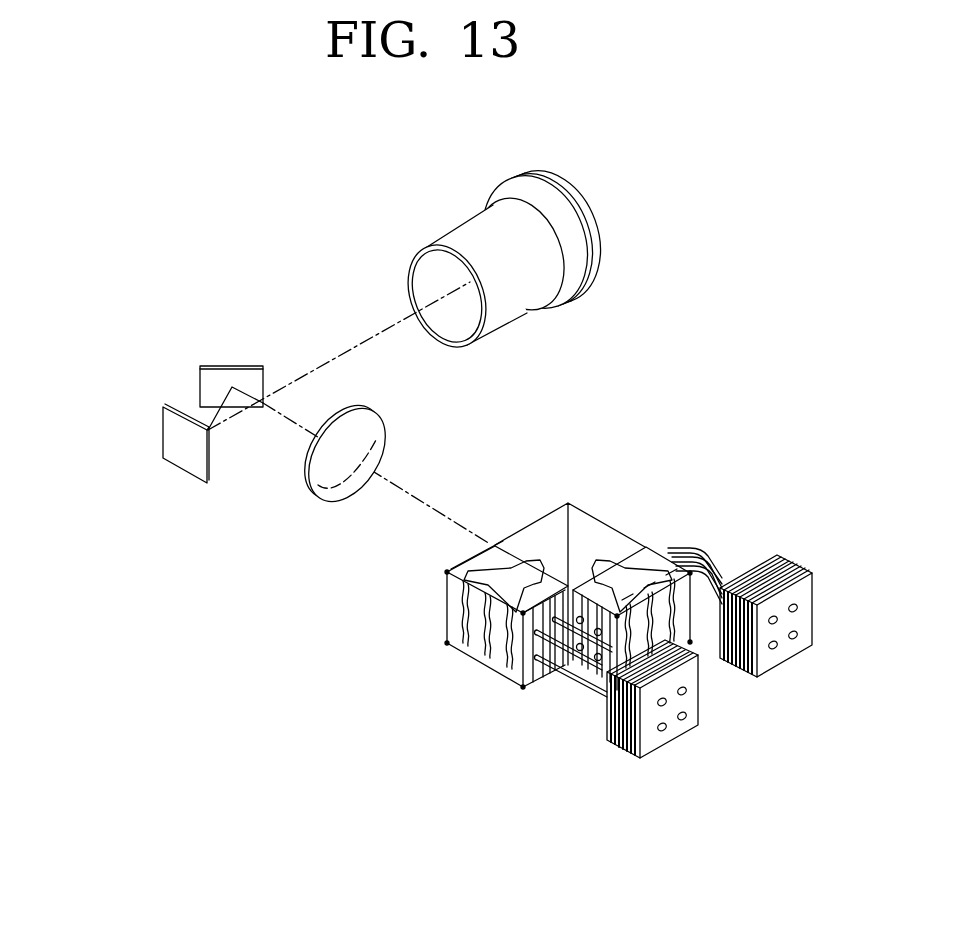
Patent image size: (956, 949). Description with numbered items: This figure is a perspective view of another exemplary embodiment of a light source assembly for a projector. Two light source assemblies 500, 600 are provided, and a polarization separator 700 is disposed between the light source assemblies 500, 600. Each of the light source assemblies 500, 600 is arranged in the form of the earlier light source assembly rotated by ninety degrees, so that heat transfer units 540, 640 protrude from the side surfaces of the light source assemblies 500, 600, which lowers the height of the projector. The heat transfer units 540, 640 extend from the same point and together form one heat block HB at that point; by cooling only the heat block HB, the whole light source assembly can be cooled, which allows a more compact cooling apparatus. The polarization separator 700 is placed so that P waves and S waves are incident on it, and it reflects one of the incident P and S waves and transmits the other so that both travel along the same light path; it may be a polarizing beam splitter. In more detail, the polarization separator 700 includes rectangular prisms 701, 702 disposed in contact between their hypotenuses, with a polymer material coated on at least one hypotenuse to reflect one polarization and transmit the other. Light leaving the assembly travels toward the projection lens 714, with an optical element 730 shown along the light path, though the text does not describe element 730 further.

The projection lens 714 is at (462, 231).
The mirror unit 730 is at (163, 384).
The polarization separator 700 is at (578, 497).
The rectangular prism 701 is at (545, 540).
The rectangular prism 702 is at (597, 538).
The light source assembly 600 is at (666, 549).
The light source assembly 500 is at (490, 683).
The heat transfer unit 540 is at (580, 694).
The heat transfer unit 640 is at (730, 556).
The heat block HB is at (730, 710).